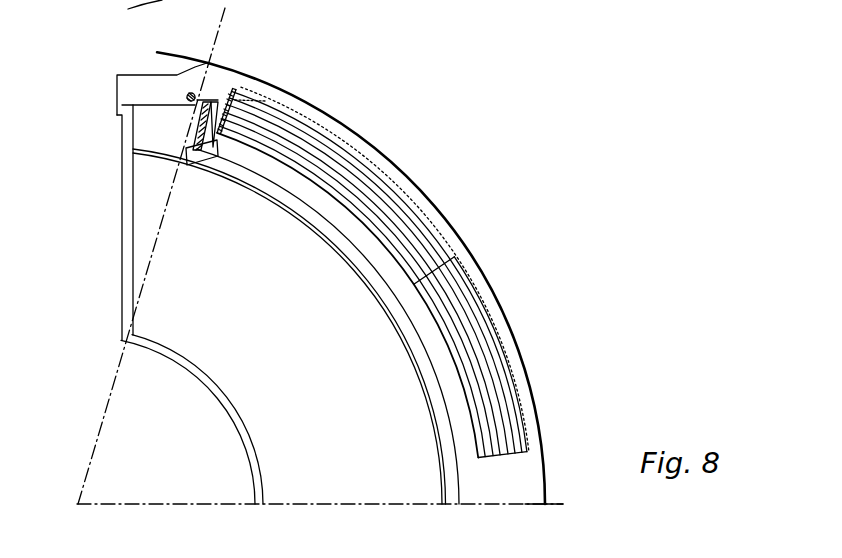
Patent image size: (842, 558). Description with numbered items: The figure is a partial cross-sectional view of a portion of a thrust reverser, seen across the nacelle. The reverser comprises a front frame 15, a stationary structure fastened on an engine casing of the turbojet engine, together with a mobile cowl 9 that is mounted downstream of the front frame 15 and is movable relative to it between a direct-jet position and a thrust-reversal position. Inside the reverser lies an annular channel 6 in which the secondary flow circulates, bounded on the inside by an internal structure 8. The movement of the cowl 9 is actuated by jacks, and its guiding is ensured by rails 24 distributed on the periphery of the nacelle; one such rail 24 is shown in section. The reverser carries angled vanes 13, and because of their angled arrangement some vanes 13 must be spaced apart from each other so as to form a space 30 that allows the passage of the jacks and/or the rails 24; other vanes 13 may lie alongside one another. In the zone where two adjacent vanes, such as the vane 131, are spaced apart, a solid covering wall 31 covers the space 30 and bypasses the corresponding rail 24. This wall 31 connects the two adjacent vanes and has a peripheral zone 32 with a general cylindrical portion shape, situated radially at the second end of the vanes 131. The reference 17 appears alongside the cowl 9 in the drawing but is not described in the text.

The annular channel 6 is at (327, 368).
The internal structure 8 is at (222, 394).
The mobile cowl 9 is at (384, 268).
The vanes 13 is at (480, 387).
The front frame 15 is at (128, 92).
The outer housing wall 17 is at (398, 169).
The rails 24 is at (195, 160).
The space 30 is at (265, 101).
The covering wall 31 is at (232, 70).
The peripheral zone 32 is at (267, 57).
The adjacent vane 131 is at (323, 163).